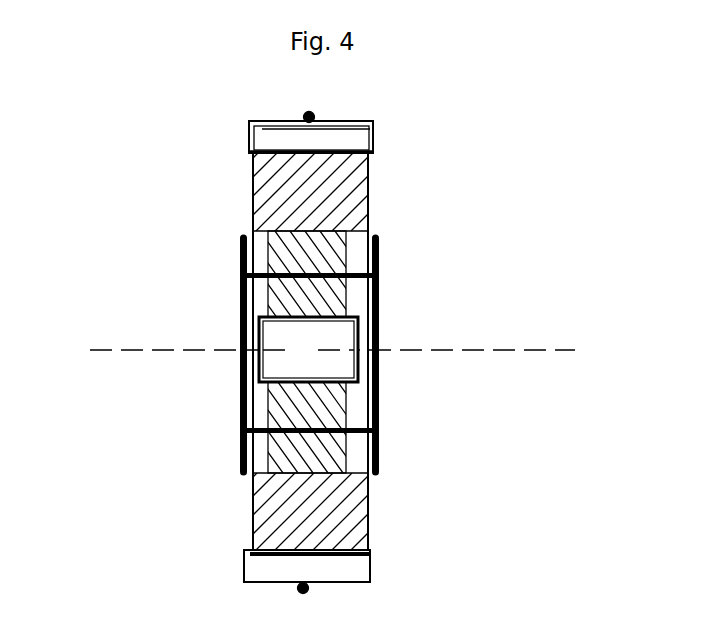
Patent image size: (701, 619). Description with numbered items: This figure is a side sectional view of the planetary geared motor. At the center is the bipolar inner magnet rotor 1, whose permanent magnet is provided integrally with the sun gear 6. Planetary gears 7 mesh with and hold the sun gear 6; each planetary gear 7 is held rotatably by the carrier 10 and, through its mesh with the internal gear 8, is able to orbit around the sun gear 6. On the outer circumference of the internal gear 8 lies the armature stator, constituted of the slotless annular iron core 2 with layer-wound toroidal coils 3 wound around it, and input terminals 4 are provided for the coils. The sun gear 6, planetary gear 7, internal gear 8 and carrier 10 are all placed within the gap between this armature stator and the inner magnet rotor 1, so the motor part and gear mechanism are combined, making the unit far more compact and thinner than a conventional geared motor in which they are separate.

The bipolar inner magnet rotor 1 is at (298, 351).
The slotless annular iron core 2 is at (292, 136).
The toroidal coil 3 is at (377, 134).
The input terminal 4 is at (309, 117).
The sun gear 6 is at (297, 340).
The planetary gear 7 is at (285, 245).
The internal gear 8 is at (323, 207).
The carrier 10 is at (379, 424).